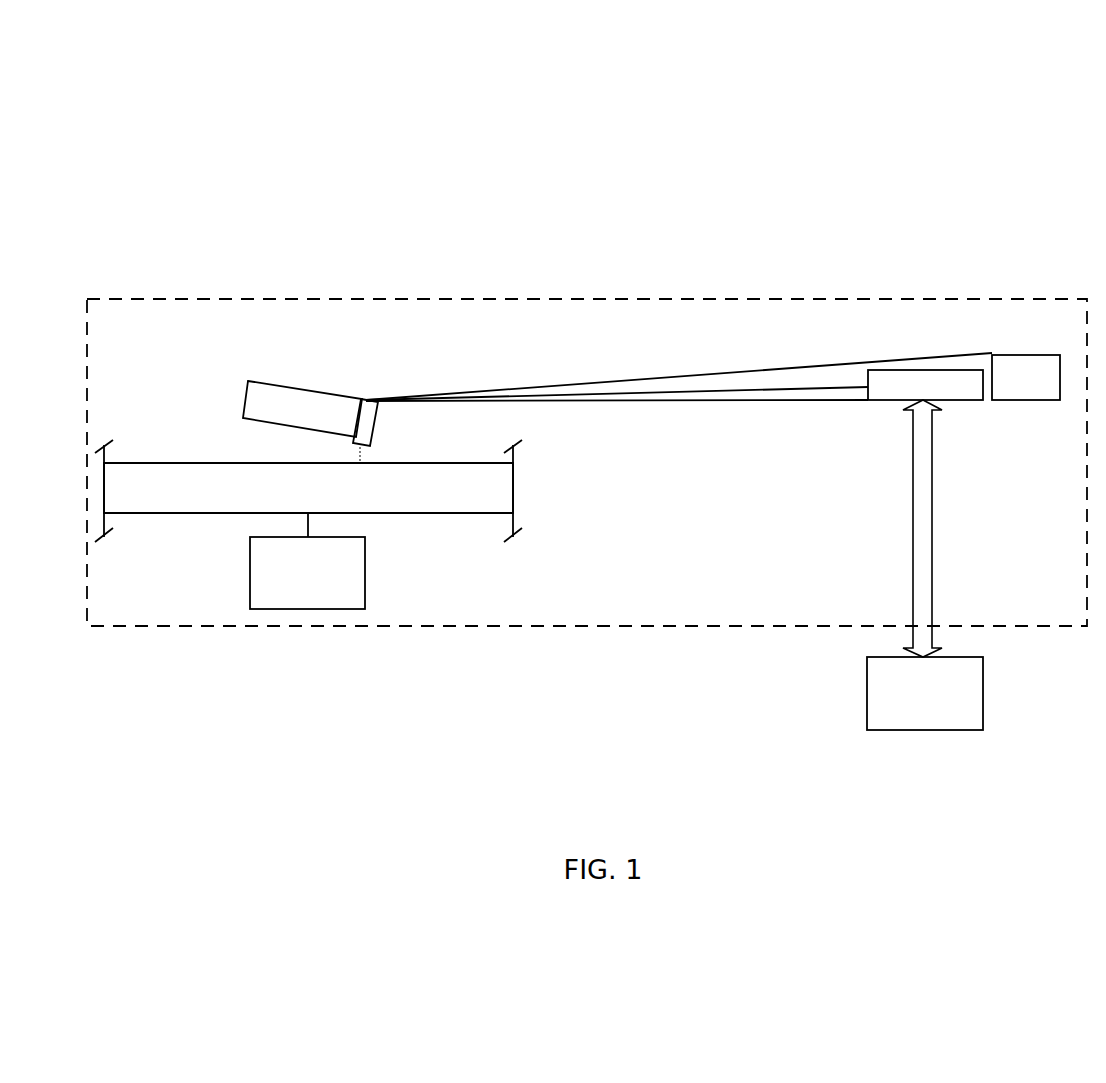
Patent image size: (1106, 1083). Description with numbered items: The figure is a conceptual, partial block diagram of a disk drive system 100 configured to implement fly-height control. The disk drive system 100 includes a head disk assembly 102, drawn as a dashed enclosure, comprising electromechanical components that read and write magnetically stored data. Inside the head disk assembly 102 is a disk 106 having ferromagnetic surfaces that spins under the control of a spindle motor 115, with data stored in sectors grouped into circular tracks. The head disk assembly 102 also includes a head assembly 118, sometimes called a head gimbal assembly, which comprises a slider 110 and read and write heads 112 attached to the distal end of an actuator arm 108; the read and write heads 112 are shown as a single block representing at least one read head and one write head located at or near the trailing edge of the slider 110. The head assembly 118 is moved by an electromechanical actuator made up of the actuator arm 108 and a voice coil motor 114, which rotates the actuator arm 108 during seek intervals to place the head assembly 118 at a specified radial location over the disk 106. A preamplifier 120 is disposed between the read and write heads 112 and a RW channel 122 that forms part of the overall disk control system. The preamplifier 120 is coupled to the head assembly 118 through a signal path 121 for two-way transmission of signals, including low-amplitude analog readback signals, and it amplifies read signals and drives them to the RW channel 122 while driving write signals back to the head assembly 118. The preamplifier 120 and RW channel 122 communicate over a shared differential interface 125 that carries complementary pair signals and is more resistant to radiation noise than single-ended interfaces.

The disk drive system 100 is at (283, 193).
The head disk assembly 102 is at (735, 299).
The disk 106 is at (127, 463).
The actuator arm 108 is at (718, 372).
The slider 110 is at (278, 380).
The read and write heads 112 is at (366, 401).
The voice coil motor 114 is at (1015, 355).
The spindle motor 115 is at (366, 547).
The head assembly 118 is at (362, 372).
The preamplifier 120 is at (903, 370).
The signal path 121 is at (788, 387).
The RW channel 122 is at (983, 673).
The differential interface 125 is at (932, 462).